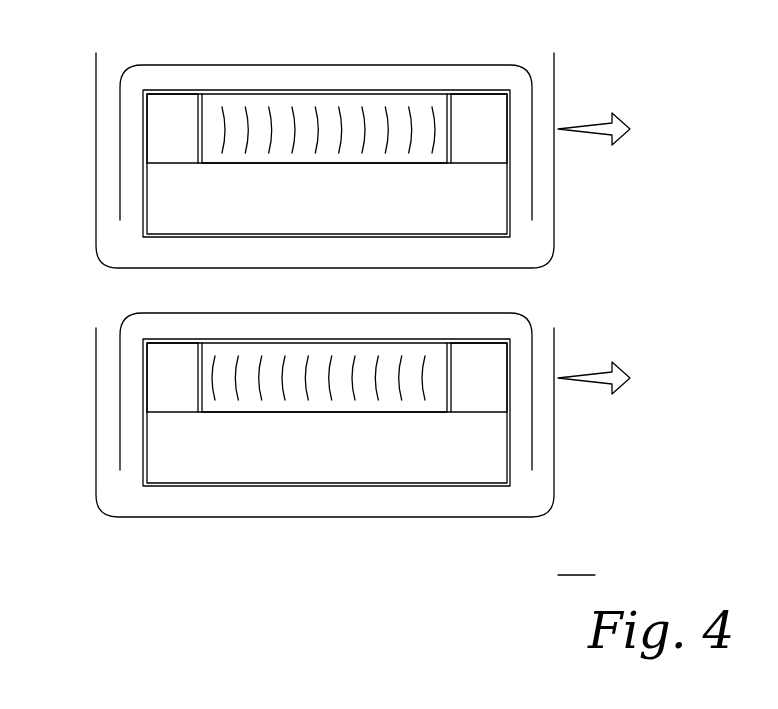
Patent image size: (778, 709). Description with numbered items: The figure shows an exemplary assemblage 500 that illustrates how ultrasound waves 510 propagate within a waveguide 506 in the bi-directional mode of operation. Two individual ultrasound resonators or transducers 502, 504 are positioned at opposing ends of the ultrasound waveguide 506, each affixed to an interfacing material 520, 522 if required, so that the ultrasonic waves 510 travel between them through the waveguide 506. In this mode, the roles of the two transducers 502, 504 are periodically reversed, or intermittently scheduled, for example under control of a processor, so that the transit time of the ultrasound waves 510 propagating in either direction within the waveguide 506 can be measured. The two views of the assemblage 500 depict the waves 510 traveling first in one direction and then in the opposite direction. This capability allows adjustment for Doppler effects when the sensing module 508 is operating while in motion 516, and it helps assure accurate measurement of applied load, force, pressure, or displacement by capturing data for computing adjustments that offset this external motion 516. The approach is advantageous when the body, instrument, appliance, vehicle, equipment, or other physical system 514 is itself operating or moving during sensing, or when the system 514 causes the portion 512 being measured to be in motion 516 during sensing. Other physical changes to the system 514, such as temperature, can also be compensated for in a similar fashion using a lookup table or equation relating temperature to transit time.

The assemblage 500 is at (576, 564).
The ultrasound resonator or transducer 502 is at (172, 102).
The ultrasound resonator or transducer 504 is at (482, 103).
The waveguide 506 is at (279, 167).
The sensing module 508 is at (155, 190).
The ultrasound waves 510 is at (300, 115).
The portion of the physical system being measured 512 is at (522, 135).
The physical system 514 is at (537, 240).
The motion 516 is at (595, 120).
The interfacing material 520 is at (212, 101).
The interfacing material 522 is at (448, 108).